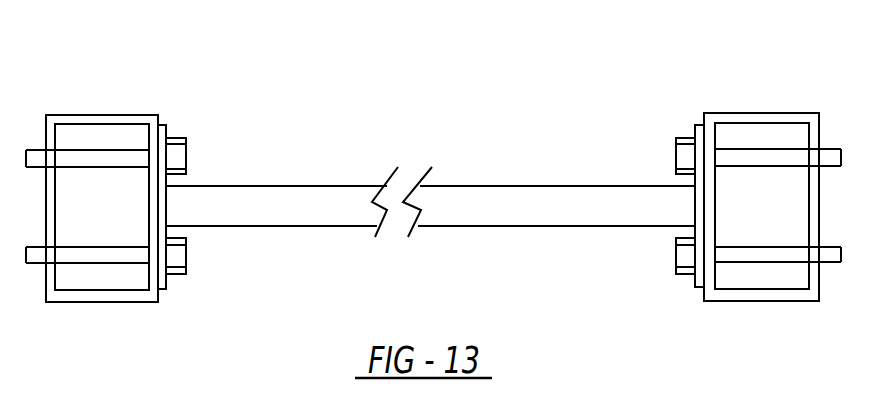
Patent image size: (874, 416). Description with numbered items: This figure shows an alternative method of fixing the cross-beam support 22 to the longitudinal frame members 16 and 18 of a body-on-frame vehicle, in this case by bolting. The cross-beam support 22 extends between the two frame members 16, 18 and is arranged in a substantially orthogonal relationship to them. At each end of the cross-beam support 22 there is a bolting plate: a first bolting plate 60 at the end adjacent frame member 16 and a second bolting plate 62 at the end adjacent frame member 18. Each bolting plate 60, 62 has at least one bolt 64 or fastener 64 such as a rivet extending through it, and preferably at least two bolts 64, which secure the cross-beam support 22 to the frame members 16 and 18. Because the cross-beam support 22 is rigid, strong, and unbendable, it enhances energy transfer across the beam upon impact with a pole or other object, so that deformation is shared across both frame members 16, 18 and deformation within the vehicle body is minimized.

The longitudinal frame member 16 is at (777, 113).
The longitudinal frame member 18 is at (95, 115).
The cross-beam support 22 is at (510, 185).
The first bolting plate 60 is at (697, 119).
The second bolting plate 62 is at (170, 118).
The bolt 64 is at (186, 153).